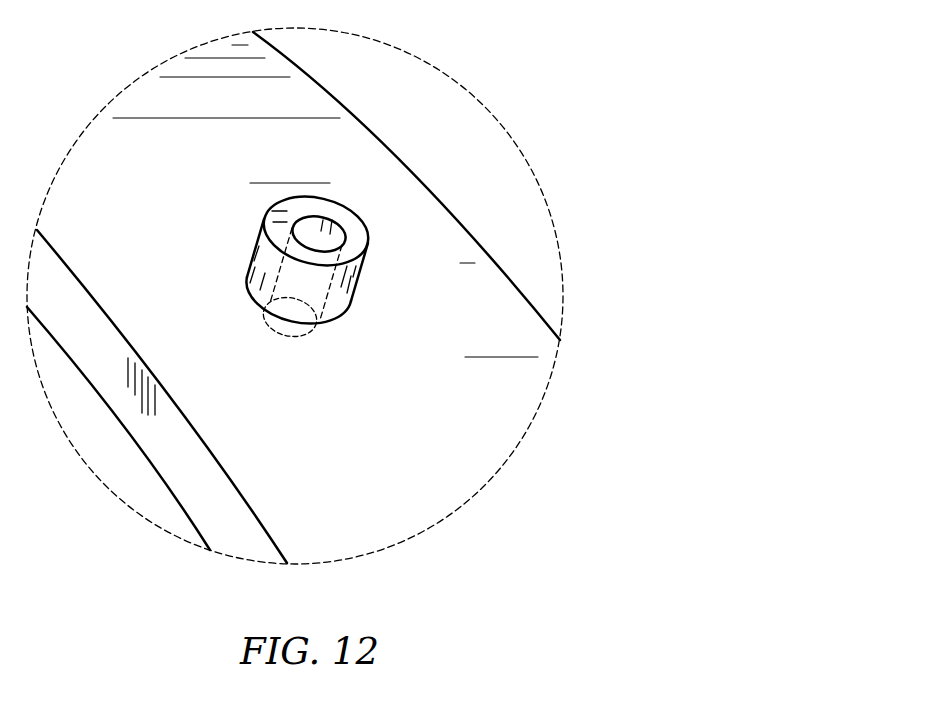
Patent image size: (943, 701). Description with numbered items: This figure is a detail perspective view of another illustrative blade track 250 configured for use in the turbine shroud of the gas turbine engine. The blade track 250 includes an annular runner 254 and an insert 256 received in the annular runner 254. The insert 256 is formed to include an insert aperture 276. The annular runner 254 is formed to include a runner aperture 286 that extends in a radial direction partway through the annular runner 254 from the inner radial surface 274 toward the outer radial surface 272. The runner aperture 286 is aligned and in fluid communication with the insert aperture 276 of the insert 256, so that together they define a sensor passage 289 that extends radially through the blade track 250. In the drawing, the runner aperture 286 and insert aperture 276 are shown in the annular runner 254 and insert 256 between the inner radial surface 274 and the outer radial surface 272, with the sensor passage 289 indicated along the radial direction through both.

The blade track 250 is at (524, 58).
The annular runner 254 is at (88, 153).
The insert 256 is at (360, 287).
The outer radial surface 272 is at (527, 328).
The inner radial surface 274 is at (143, 455).
The insert aperture 276 is at (329, 228).
The runner aperture 286 is at (296, 330).
The sensor passage 289 is at (302, 242).